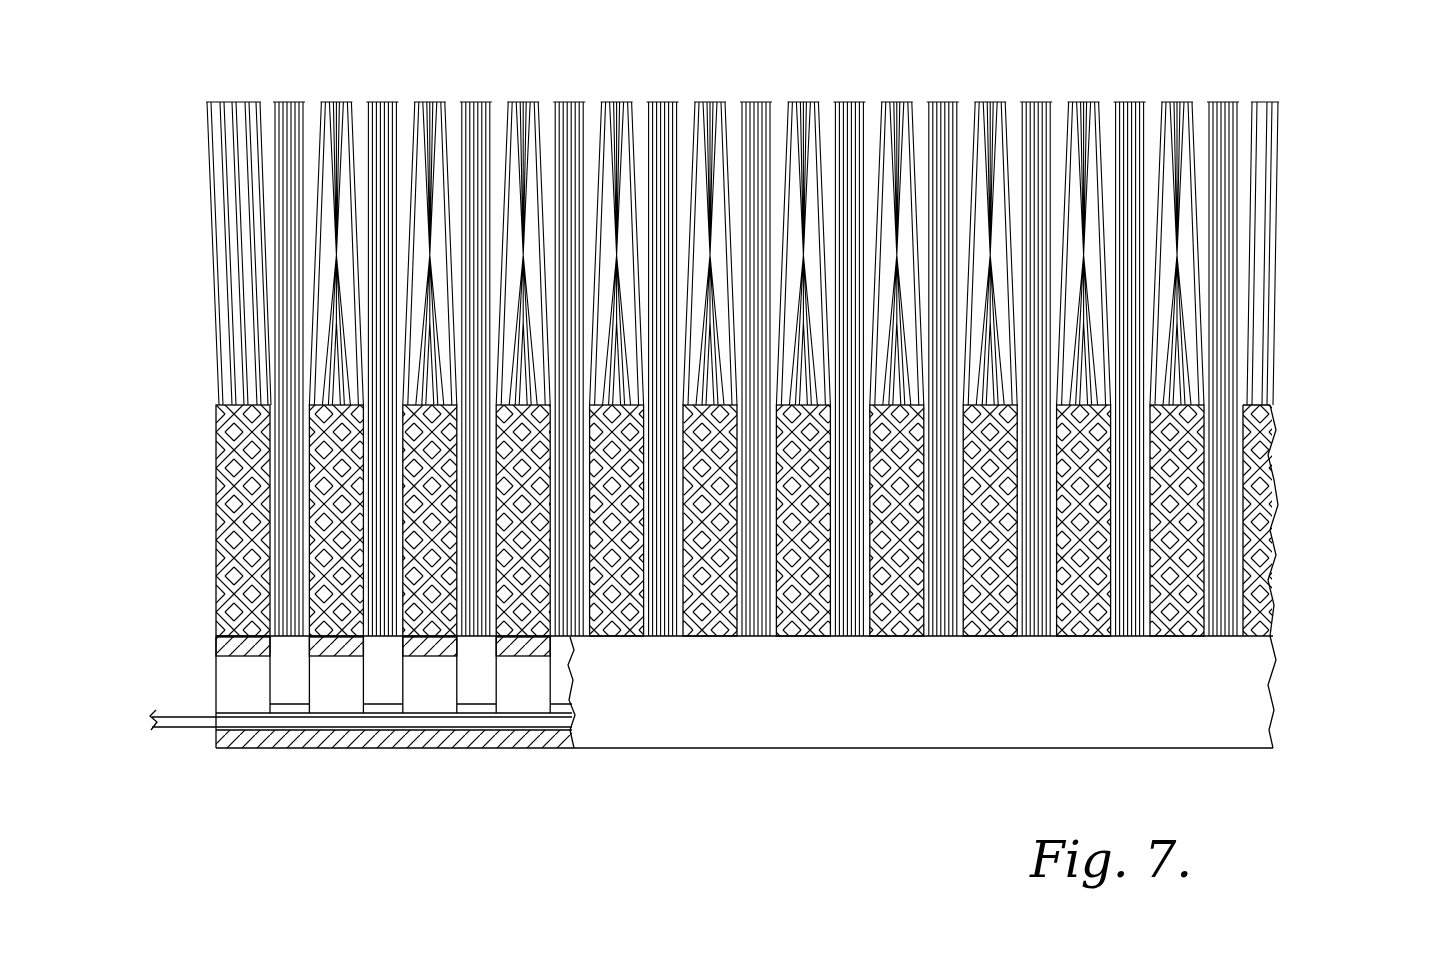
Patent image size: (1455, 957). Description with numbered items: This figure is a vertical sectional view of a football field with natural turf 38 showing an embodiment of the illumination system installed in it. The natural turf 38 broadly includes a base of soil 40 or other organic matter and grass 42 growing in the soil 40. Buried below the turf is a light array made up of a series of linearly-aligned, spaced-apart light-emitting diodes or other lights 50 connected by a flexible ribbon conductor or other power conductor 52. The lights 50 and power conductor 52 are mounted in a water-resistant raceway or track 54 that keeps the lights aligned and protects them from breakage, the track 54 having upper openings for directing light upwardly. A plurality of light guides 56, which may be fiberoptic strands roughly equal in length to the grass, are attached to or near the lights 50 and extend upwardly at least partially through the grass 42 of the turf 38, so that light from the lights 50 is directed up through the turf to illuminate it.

The natural turf 38 is at (1348, 320).
The soil 40 is at (1262, 510).
The grass 42 is at (1180, 105).
The lights 50 is at (385, 695).
The power conductor 52 is at (255, 722).
The raceway or track 54 is at (823, 727).
The light guides 56 is at (388, 108).